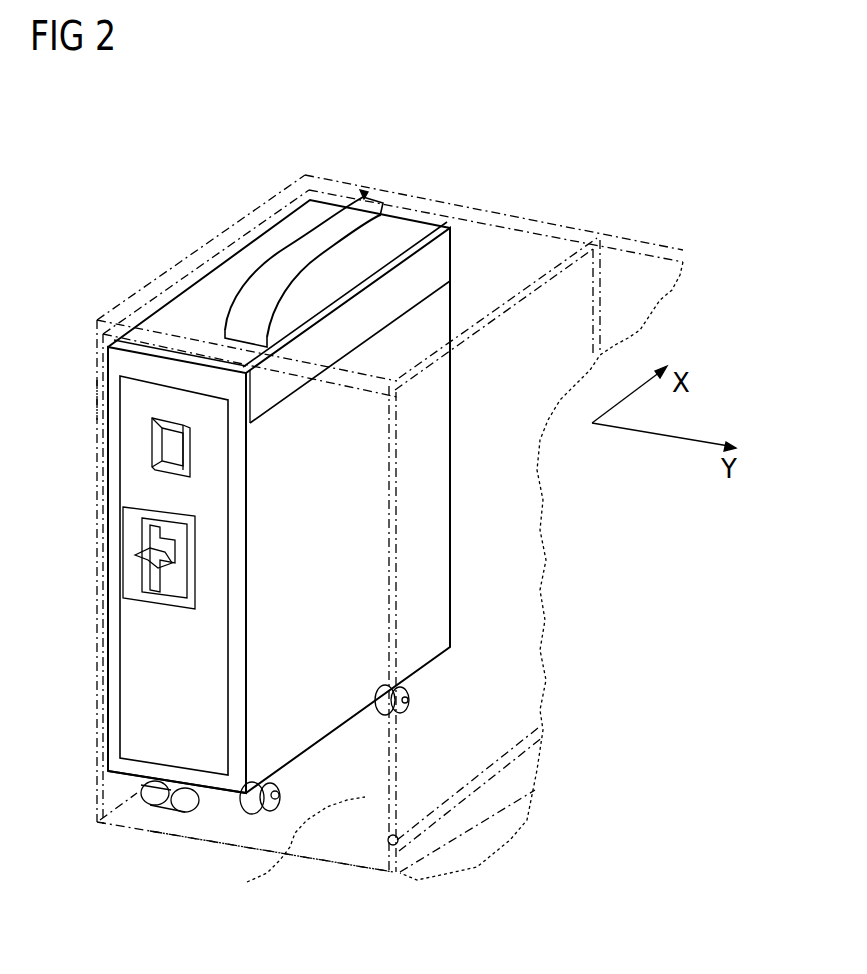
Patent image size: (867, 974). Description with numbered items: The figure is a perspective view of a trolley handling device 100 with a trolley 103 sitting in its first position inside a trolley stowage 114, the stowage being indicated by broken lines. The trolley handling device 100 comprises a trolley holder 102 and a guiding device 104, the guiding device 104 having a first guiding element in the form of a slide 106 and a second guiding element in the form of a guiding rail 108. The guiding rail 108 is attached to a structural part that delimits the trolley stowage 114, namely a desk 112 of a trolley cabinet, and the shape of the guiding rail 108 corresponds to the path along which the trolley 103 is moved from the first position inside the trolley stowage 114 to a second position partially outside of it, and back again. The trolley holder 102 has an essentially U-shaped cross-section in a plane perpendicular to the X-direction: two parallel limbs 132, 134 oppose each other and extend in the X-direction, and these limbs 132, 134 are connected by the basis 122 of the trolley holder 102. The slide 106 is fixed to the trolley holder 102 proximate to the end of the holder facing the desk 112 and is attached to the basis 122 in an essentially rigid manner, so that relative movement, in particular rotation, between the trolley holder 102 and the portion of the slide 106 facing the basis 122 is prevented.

The trolley handling device 100 is at (285, 465).
The trolley holder 102 is at (450, 213).
The trolley 103 is at (310, 733).
The guiding device 104 is at (366, 192).
The slide 106 is at (385, 250).
The guiding rail 108 is at (313, 248).
The desk 112 is at (280, 221).
The trolley stowage 114 is at (278, 860).
The basis of the trolley holder 122 is at (190, 322).
The limb of the trolley holder 132 is at (455, 266).
The limb of the trolley holder 134 is at (103, 400).